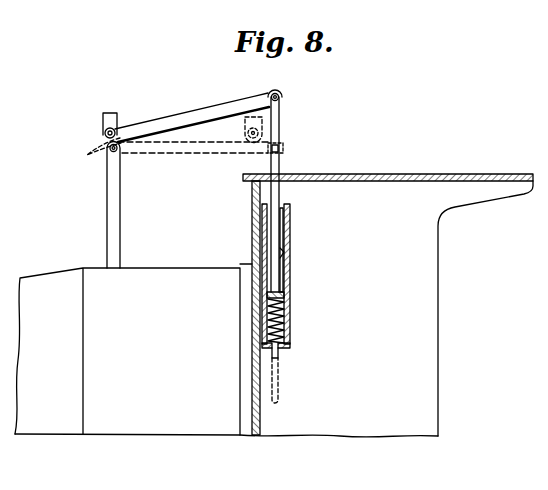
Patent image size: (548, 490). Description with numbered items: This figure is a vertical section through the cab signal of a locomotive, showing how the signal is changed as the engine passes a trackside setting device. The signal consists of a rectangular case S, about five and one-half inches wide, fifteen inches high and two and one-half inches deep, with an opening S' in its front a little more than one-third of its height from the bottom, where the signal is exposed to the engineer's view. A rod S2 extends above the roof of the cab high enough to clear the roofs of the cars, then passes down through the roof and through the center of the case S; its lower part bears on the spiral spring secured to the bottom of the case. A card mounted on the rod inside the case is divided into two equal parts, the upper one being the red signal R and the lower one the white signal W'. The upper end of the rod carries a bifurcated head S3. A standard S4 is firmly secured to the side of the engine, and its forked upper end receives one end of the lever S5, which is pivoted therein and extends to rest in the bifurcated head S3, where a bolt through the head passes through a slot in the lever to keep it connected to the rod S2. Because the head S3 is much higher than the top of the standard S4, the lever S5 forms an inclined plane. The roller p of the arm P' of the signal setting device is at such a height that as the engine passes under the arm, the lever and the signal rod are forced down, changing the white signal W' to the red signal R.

The case S is at (286, 272).
The opening S' is at (291, 341).
The rod S2 is at (285, 128).
The bifurcated head S3 is at (282, 98).
The standard S4 is at (108, 228).
The lever S5 is at (211, 112).
The red signal R is at (283, 231).
The white signal W' is at (297, 262).
The arm P' is at (100, 116).
The roller p is at (104, 134).